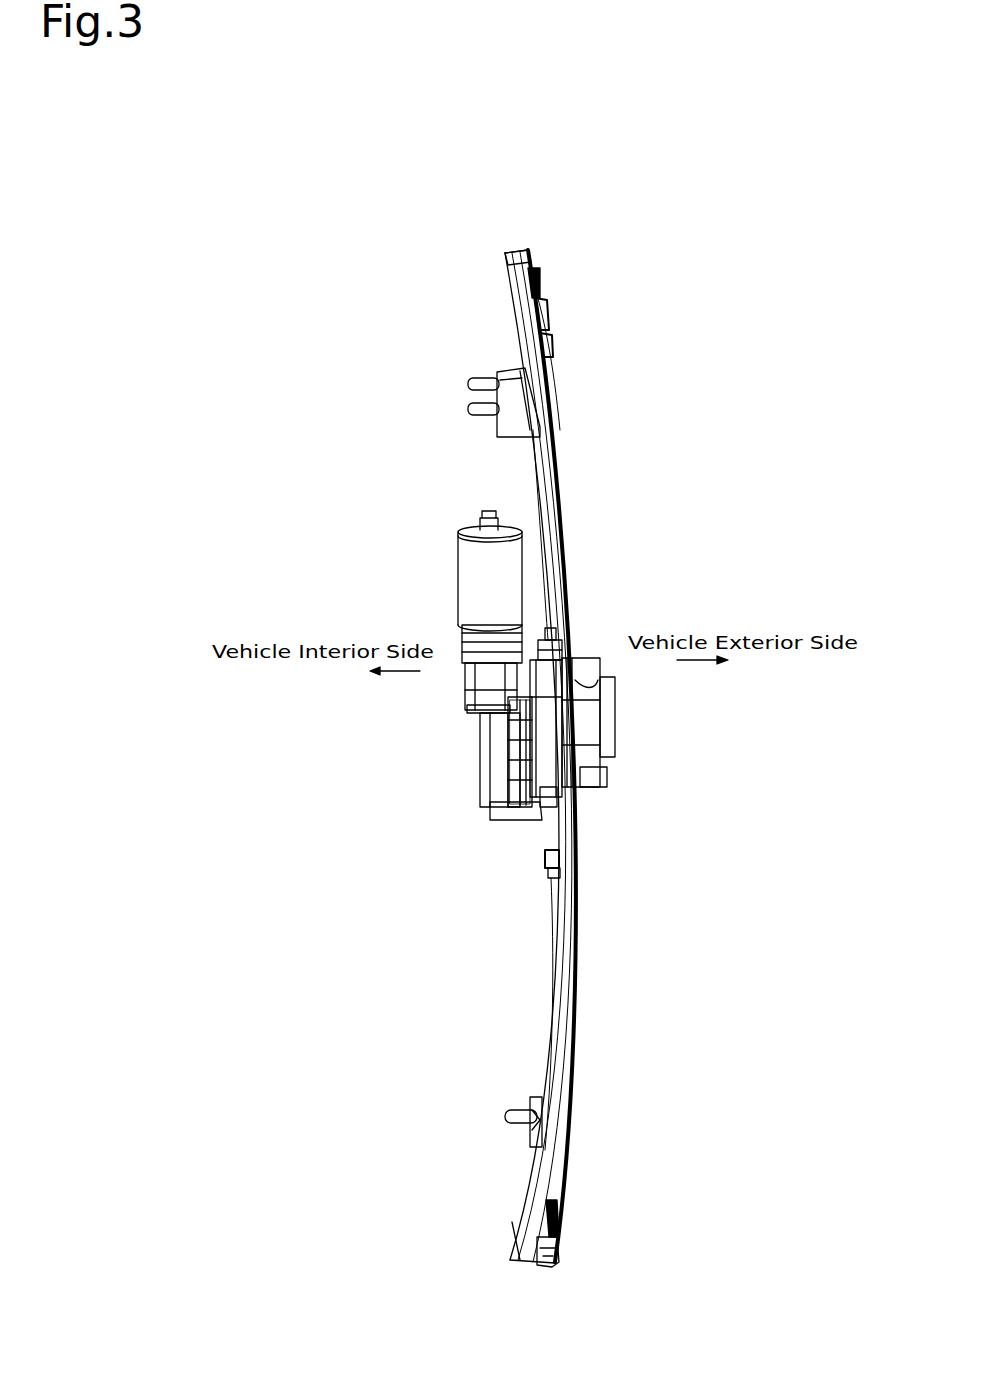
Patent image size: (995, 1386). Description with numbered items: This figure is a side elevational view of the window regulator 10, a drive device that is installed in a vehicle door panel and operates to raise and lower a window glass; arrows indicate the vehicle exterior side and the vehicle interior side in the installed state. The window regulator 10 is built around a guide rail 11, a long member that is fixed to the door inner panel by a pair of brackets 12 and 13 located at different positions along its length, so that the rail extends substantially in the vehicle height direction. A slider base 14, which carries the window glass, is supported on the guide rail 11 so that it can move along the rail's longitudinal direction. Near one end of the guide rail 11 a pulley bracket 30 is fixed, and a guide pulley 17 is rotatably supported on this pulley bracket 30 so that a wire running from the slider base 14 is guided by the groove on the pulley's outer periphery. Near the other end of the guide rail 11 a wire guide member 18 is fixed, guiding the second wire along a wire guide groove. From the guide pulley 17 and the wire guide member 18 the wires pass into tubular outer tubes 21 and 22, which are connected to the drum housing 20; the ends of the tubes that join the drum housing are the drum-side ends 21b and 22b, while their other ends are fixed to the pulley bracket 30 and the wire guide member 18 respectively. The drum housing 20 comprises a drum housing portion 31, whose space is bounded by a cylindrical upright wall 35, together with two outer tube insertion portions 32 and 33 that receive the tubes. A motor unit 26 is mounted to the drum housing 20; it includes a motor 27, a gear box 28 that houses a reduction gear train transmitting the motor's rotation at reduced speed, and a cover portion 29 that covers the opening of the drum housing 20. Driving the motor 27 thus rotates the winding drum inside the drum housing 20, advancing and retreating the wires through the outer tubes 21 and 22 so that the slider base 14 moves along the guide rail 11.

The window regulator 10 is at (413, 257).
The guide rail 11 is at (555, 498).
The bracket 12 is at (512, 386).
The bracket 13 is at (526, 1125).
The slider base 14 is at (600, 703).
The guide pulley 17 is at (540, 293).
The wire guide member 18 is at (578, 1237).
The drum housing 20 is at (578, 750).
The outer tube 21 is at (541, 504).
The drum-side end 21b is at (550, 634).
The outer tube 22 is at (553, 923).
The drum-side end 22b is at (557, 871).
The motor unit 26 is at (443, 528).
The motor 27 is at (475, 578).
The gear box 28 is at (493, 735).
The cover portion 29 is at (505, 790).
The pulley bracket 30 is at (547, 365).
The drum housing portion 31 is at (550, 740).
The outer tube insertion portion 32 is at (560, 650).
The outer tube insertion portion 33 is at (547, 866).
The cylindrical upright wall 35 is at (520, 752).